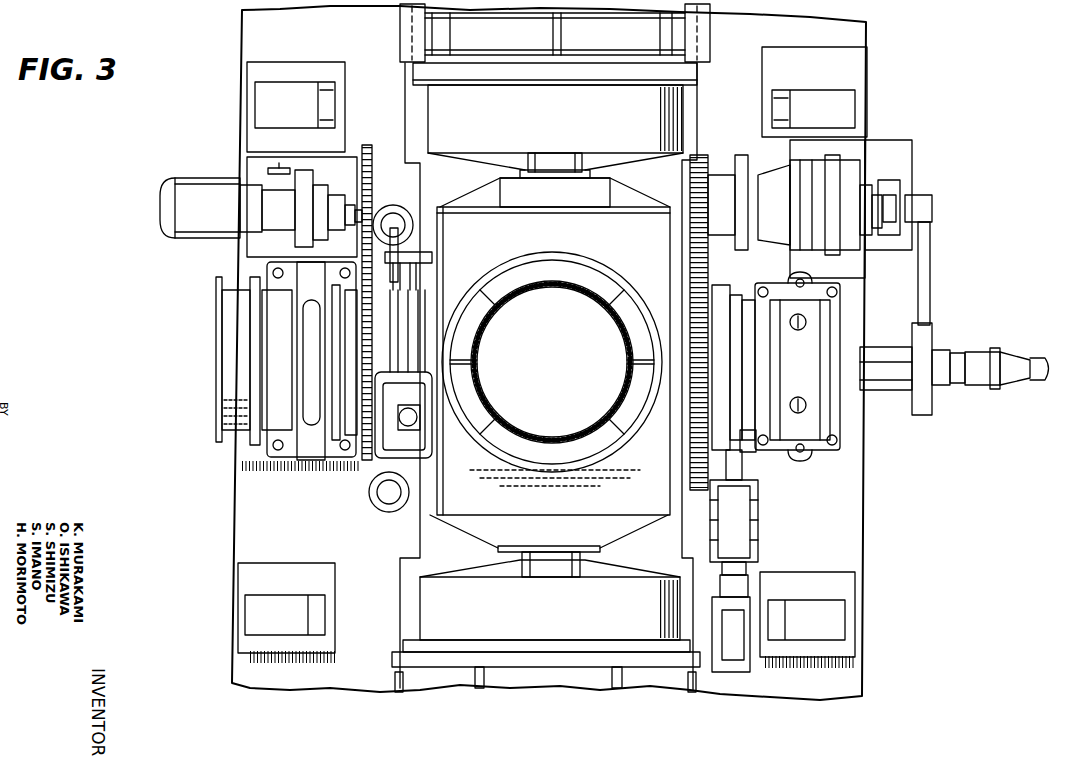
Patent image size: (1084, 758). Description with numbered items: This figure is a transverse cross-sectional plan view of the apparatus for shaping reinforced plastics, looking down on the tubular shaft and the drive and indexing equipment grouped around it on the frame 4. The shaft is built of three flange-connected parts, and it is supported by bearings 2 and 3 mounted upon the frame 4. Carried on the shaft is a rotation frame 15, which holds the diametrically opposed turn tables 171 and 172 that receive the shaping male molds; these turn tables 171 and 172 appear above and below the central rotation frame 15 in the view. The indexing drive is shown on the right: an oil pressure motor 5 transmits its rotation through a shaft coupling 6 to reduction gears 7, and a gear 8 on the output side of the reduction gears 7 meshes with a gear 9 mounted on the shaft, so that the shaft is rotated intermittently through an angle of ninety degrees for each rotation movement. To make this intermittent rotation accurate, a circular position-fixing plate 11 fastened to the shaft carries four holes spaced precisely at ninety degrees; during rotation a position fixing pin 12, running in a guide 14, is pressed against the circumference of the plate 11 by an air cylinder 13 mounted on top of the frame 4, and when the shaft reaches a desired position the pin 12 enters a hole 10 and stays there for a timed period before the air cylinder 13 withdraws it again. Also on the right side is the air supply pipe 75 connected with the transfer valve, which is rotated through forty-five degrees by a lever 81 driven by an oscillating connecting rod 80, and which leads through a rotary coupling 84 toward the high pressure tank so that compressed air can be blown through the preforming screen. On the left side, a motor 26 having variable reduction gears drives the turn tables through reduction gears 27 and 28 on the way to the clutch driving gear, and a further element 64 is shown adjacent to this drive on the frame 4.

The frame 4 is at (243, 52).
The motor having reduction gears 26 is at (197, 197).
The reduction gear 27 is at (368, 146).
The turn table 172 is at (686, 106).
The turn table 171 is at (523, 630).
The gear 8 is at (702, 165).
The reduction gears 7 is at (815, 176).
The shaft coupling 6 is at (897, 208).
The oil pressure motor 5 is at (927, 203).
The connecting rod 80 is at (932, 267).
The rotary coupling 84 is at (1002, 362).
The lever 81 is at (925, 402).
The air supply pipe 75 is at (882, 392).
The bearing 2 is at (805, 380).
The gear 9 is at (692, 270).
The hole 10 is at (738, 373).
The position fixing plate 11 is at (755, 432).
The position fixing pin 12 is at (742, 462).
The guide 14 is at (745, 536).
The air cylinder 13 is at (737, 638).
The rotation frame 15 is at (640, 497).
The pin 64 is at (383, 503).
The gear 28 is at (370, 455).
The bearing 3 is at (313, 412).